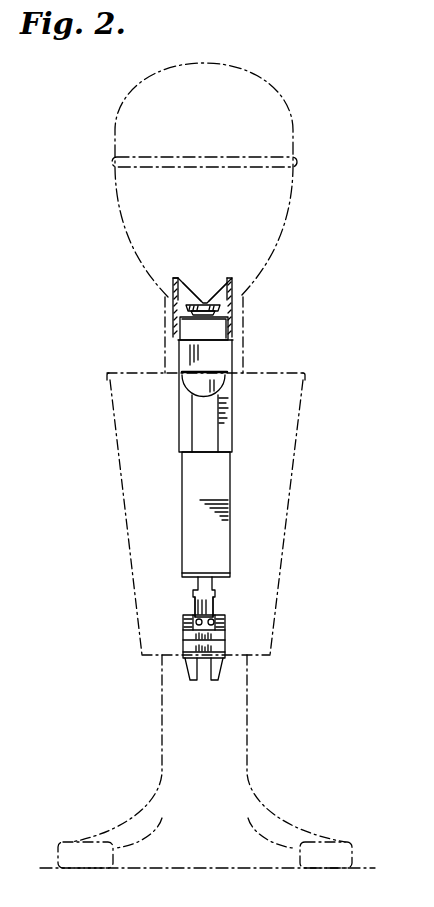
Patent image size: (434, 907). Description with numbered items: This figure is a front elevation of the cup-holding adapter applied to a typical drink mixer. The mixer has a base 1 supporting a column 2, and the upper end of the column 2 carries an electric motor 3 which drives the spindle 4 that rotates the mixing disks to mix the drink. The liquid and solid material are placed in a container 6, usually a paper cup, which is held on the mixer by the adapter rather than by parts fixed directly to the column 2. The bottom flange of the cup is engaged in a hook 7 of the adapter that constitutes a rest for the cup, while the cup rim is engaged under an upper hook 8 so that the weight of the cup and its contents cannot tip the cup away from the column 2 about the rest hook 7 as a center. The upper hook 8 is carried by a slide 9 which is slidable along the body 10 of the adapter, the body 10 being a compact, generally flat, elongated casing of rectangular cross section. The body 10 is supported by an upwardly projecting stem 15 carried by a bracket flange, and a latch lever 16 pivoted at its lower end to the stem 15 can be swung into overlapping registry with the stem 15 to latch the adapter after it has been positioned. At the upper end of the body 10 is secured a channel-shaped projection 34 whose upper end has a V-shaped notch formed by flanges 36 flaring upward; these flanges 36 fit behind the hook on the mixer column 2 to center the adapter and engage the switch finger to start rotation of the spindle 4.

The base 1 is at (110, 835).
The column 2 is at (235, 740).
The electric motor 3 is at (265, 250).
The spindle 4 is at (172, 318).
The container 6 is at (152, 539).
The hook 7 is at (223, 650).
The upper hook 8 is at (218, 385).
The slide 9 is at (228, 415).
The body 10 is at (222, 490).
The stem 15 is at (210, 582).
The latch lever 16 is at (195, 603).
The channel-shaped projection 34 is at (226, 311).
The flanges 36 is at (213, 281).